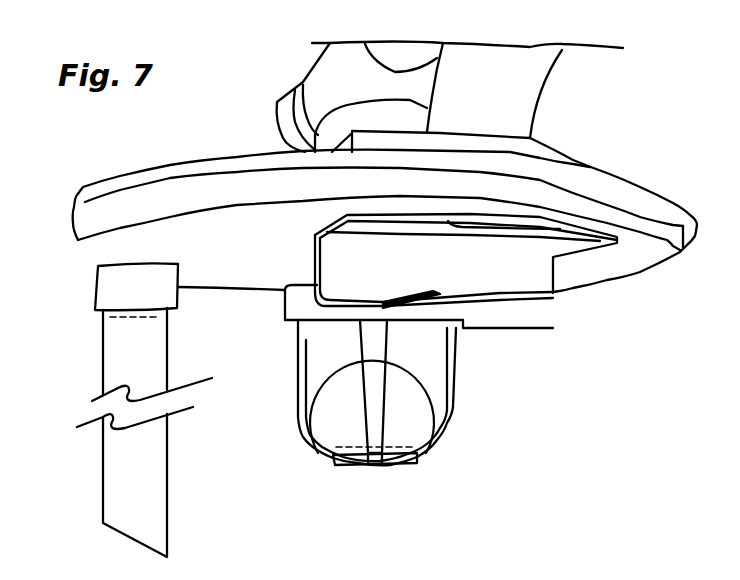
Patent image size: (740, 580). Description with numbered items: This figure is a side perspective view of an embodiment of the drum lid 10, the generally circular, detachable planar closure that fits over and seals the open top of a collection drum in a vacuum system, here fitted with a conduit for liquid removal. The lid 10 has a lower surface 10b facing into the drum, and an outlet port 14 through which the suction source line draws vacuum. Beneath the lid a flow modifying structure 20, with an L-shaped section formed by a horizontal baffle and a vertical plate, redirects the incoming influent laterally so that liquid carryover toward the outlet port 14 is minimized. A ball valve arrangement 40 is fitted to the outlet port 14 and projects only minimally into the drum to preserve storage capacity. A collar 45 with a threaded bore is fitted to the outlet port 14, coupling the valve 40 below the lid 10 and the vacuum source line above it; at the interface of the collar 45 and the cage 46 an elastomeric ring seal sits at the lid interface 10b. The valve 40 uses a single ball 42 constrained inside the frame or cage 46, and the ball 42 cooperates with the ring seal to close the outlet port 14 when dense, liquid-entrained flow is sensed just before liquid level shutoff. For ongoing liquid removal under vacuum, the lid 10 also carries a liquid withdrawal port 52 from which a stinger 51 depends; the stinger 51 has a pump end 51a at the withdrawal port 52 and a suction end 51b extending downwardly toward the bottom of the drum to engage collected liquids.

The lid 10 is at (386, 211).
The lower surface of the lid 10b is at (263, 272).
The outlet port 14 is at (414, 403).
The flow modifying structure 20 is at (612, 312).
The ball valve arrangement 40 is at (418, 420).
The ball 42 is at (354, 424).
The collar 45 is at (285, 307).
The cage 46 is at (299, 386).
The stinger 51 is at (141, 414).
The pump end 51a is at (168, 330).
The suction end 51b is at (167, 543).
The liquid withdrawal port 52 is at (95, 298).